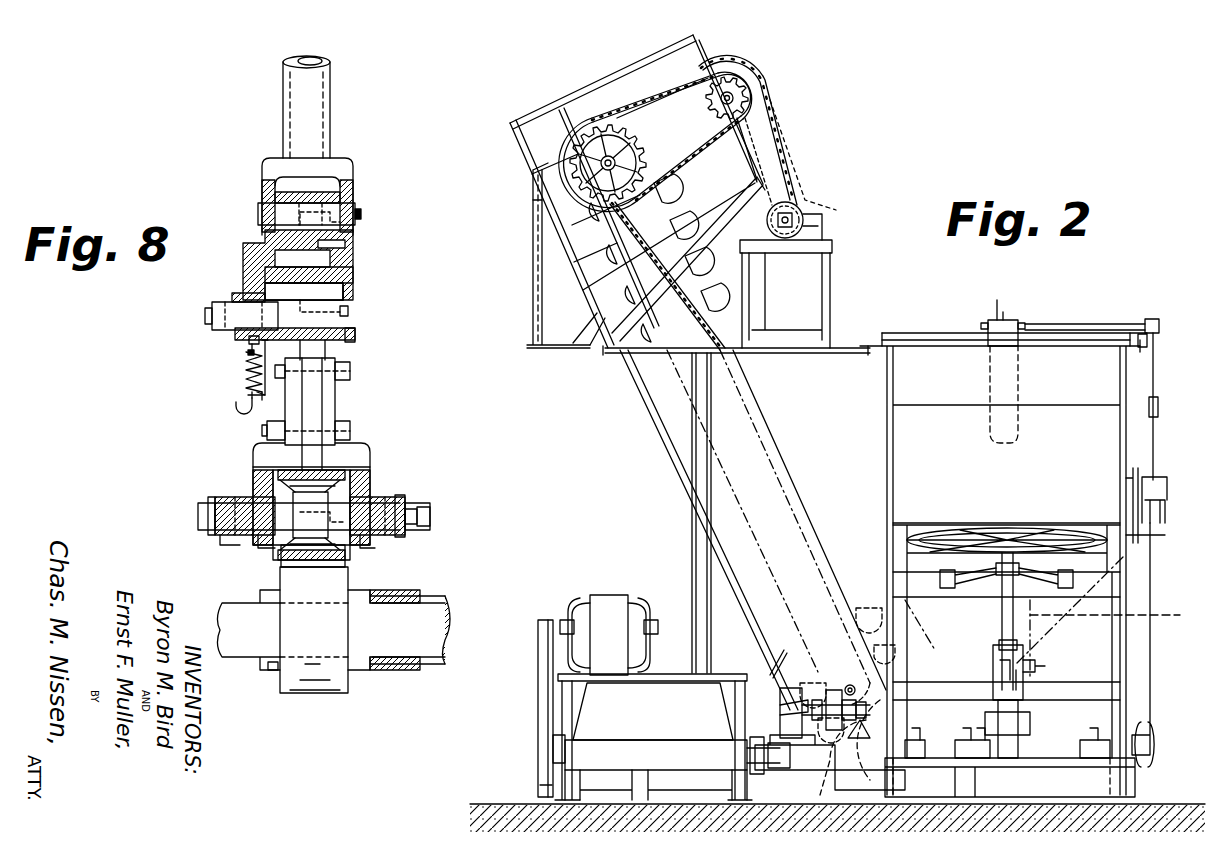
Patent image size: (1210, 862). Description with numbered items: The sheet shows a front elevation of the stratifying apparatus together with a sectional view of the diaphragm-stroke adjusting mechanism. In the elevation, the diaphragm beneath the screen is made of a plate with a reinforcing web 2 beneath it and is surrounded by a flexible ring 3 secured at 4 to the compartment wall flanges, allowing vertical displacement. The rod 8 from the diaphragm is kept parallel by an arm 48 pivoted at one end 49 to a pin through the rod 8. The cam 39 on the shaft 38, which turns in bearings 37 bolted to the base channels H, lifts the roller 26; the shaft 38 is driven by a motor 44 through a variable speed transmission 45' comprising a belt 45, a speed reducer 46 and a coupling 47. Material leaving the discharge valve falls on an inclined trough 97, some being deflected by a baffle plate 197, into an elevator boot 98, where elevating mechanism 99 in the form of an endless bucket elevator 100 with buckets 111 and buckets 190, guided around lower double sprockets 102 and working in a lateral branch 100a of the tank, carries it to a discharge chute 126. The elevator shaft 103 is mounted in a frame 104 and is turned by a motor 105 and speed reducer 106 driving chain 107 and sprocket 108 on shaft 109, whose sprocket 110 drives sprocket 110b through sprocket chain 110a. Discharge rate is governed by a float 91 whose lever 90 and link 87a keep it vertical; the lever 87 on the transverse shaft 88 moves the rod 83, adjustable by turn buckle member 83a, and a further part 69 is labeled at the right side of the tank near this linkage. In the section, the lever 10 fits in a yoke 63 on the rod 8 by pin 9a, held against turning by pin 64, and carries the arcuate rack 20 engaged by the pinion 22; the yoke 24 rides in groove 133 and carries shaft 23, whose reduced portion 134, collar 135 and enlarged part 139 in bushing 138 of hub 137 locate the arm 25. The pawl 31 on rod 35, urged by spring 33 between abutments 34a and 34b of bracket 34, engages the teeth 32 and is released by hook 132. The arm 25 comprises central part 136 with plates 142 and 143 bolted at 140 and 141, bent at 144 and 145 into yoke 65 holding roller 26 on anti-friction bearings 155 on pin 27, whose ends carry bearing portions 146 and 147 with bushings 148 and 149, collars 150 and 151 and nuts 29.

In FIG. 8, the rod 8 is at (320, 102).
In FIG. 8, the yoke 63 is at (353, 190).
In FIG. 8, the rocker lever 10 is at (355, 230).
In FIG. 8, the pin 9a is at (350, 208).
In FIG. 8, the pin 64 is at (282, 220).
In FIG. 8, the arcuate rack 20 is at (252, 268).
In FIG. 8, the groove 133 is at (345, 244).
In FIG. 8, the yoke 24 is at (355, 272).
In FIG. 8, the shaft (pin) 23 is at (343, 293).
In FIG. 8, the enlarged part of pin 139 is at (298, 306).
In FIG. 8, the collar 135 is at (238, 300).
In FIG. 8, the reduced portion of pin 134 is at (216, 316).
In FIG. 8, the bushing 138 is at (356, 334).
In FIG. 8, the hub 137 is at (328, 345).
In FIG. 8, the pinion 22 is at (250, 338).
In FIG. 8, the teeth of pinion 32 is at (250, 341).
In FIG. 8, the pawl 31 is at (252, 346).
In FIG. 8, the abutment 34a is at (248, 357).
In FIG. 8, the spring 33 is at (248, 372).
In FIG. 8, the abutment 34b is at (260, 394).
In FIG. 8, the rod 35 is at (242, 398).
In FIG. 8, the hook 132 is at (234, 406).
In FIG. 8, the bracket 34 is at (269, 403).
In FIG. 8, the plate 143 is at (336, 393).
In FIG. 8, the central part of arm 136 is at (312, 405).
In FIG. 8, the bolt 140 is at (350, 371).
In FIG. 8, the bolt 141 is at (350, 430).
In FIG. 8, the plate 142 is at (290, 418).
In FIG. 8, the arm 25 is at (384, 413).
In FIG. 8, the bent end of plate 144 is at (258, 458).
In FIG. 8, the bent end of plate 145 is at (370, 458).
In FIG. 8, the yoke 65 is at (385, 477).
In FIG. 8, the roller 26 is at (275, 480).
In FIG. 2, the roller 26 is at (1022, 718).
In FIG. 8, the nuts 29 is at (212, 508).
In FIG. 8, the collar 151 is at (408, 508).
In FIG. 8, the pin 27 is at (430, 521).
In FIG. 8, the collar 150 is at (212, 530).
In FIG. 8, the bushing 149 is at (402, 535).
In FIG. 8, the bushing 148 is at (228, 540).
In FIG. 8, the bearing portion of lever 146 is at (264, 545).
In FIG. 8, the bearing portion of lever 147 is at (372, 548).
In FIG. 8, the anti-friction bearings 155 is at (338, 552).
In FIG. 8, the cam 39 is at (312, 680).
In FIG. 2, the cam 39 is at (1018, 740).
In FIG. 8, the shaft 38 is at (430, 620).
In FIG. 2, the shaft 38 is at (935, 752).
In FIG. 2, the frame 104 is at (511, 113).
In FIG. 2, the discharge chute 126 is at (533, 243).
In FIG. 2, the shaft 103 is at (604, 163).
In FIG. 2, the sprocket 110 is at (727, 88).
In FIG. 2, the sprocket chain 110a is at (672, 100).
In FIG. 2, the sprocket 110b is at (570, 170).
In FIG. 2, the sprocket 108 is at (742, 76).
In FIG. 2, the shaft 109 is at (735, 98).
In FIG. 2, the chain 107 is at (778, 140).
In FIG. 2, the motor 105 is at (792, 208).
In FIG. 2, the speed reducer 106 is at (841, 198).
In FIG. 2, the buckets 111 is at (612, 268).
In FIG. 2, the elevating mechanism 99 is at (672, 345).
In FIG. 2, the lateral branch of tank 100a is at (665, 440).
In FIG. 2, the endless bucket elevator 100 is at (756, 424).
In FIG. 2, the buckets 190 is at (868, 605).
In FIG. 2, the motor 44 is at (608, 600).
In FIG. 2, the belt 45 is at (613, 710).
In FIG. 2, the variable speed transmission 45' is at (523, 738).
In FIG. 2, the speed reducer 46 is at (792, 700).
In FIG. 2, the coupling 47 is at (848, 700).
In FIG. 2, the lower double sprockets 102 is at (835, 640).
In FIG. 2, the elevator boot 98 is at (860, 776).
In FIG. 2, the reinforcing web 2 is at (1038, 540).
In FIG. 2, the flexible ring 3 is at (930, 535).
In FIG. 2, the securing point 4 is at (1013, 504).
In FIG. 2, the pivot end of arm 49 is at (1012, 572).
In FIG. 2, the arm 48 is at (980, 580).
In FIG. 2, the baffle plate 197 is at (938, 652).
In FIG. 2, the inclined trough 97 is at (1117, 616).
In FIG. 2, the bearings 37 is at (1094, 738).
In FIG. 2, the base channels H is at (1135, 782).
In FIG. 2, the ground line G is at (1088, 784).
In FIG. 2, the float 91 is at (994, 320).
In FIG. 2, the lever 90 is at (982, 324).
In FIG. 2, the transverse shaft 88 is at (1108, 323).
In FIG. 2, the lever 87 is at (1155, 318).
In FIG. 2, the link 87a is at (988, 372).
In FIG. 2, the rod 83 is at (1154, 452).
In FIG. 2, the turn buckle member 83a is at (1159, 408).
In FIG. 2, the mechanism 69 is at (1143, 532).